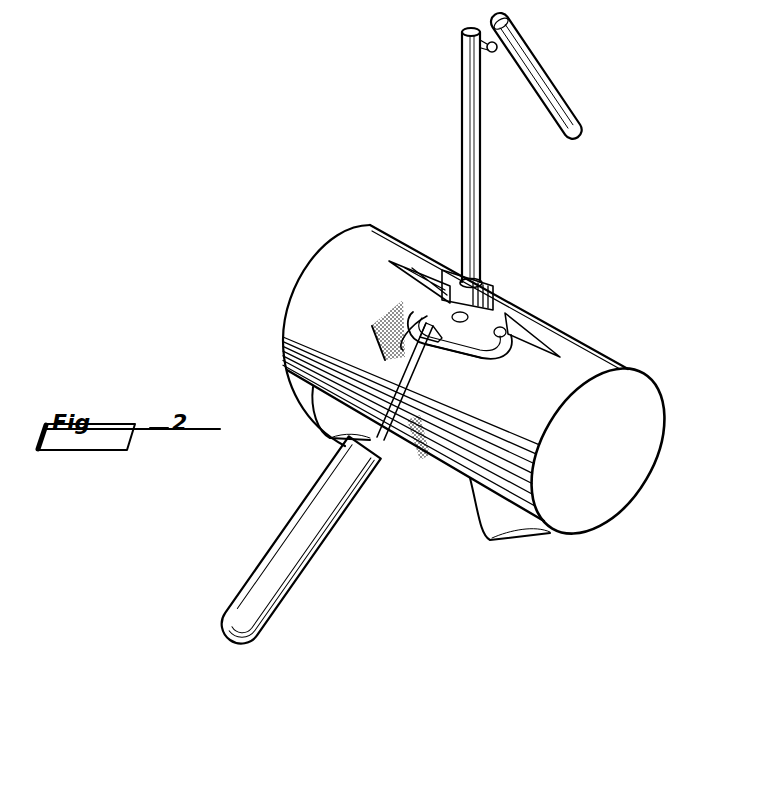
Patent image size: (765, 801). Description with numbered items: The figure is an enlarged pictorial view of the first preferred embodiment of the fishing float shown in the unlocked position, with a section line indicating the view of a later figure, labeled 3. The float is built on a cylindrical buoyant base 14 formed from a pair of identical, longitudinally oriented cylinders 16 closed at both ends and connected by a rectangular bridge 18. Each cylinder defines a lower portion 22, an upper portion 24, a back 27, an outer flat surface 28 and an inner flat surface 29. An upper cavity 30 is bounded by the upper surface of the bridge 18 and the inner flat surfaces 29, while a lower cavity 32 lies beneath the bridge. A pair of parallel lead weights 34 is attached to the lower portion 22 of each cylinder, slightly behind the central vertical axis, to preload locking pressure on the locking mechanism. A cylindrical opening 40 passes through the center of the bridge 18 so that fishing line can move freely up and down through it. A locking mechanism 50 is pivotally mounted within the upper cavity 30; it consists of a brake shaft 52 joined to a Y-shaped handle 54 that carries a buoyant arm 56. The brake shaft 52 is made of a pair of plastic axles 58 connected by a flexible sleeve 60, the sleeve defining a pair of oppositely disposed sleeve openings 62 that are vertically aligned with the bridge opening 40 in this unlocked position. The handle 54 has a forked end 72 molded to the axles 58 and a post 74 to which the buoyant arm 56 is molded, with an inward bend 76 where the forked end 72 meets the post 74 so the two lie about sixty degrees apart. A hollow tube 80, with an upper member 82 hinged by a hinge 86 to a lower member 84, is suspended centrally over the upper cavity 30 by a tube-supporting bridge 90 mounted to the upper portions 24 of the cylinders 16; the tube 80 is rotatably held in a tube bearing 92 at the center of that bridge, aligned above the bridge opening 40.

The section line for FIG. 3 is at (422, 582).
The buoyant base 14 is at (575, 363).
The cylinders 16 is at (333, 294).
The bridge 18 is at (390, 442).
The lower portion 22 is at (562, 541).
The upper portion 24 is at (357, 224).
The back 27 is at (307, 305).
The outer flat surface 28 is at (655, 455).
The inner flat surface 29 is at (397, 323).
The upper cavity 30 is at (520, 323).
The lower cavity 32 is at (441, 483).
The weights 34 is at (310, 400).
The cylindrical opening 40 is at (450, 355).
The locking mechanism 50 is at (246, 559).
The brake shaft 52 is at (416, 303).
The Y-shaped handle 54 is at (393, 440).
The buoyant arm 56 is at (333, 547).
The axles 58 is at (433, 253).
The sleeve 60 is at (452, 277).
The sleeve openings 62 is at (427, 340).
The forked end 72 is at (493, 343).
The post 74 is at (457, 410).
The bend 76 is at (373, 360).
The hollow tube 80 is at (456, 56).
The upper member 82 is at (553, 80).
The lower member 84 is at (483, 200).
The hinge 86 is at (496, 54).
The tube-supporting bridge 90 is at (533, 320).
The tube bearing 92 is at (491, 260).